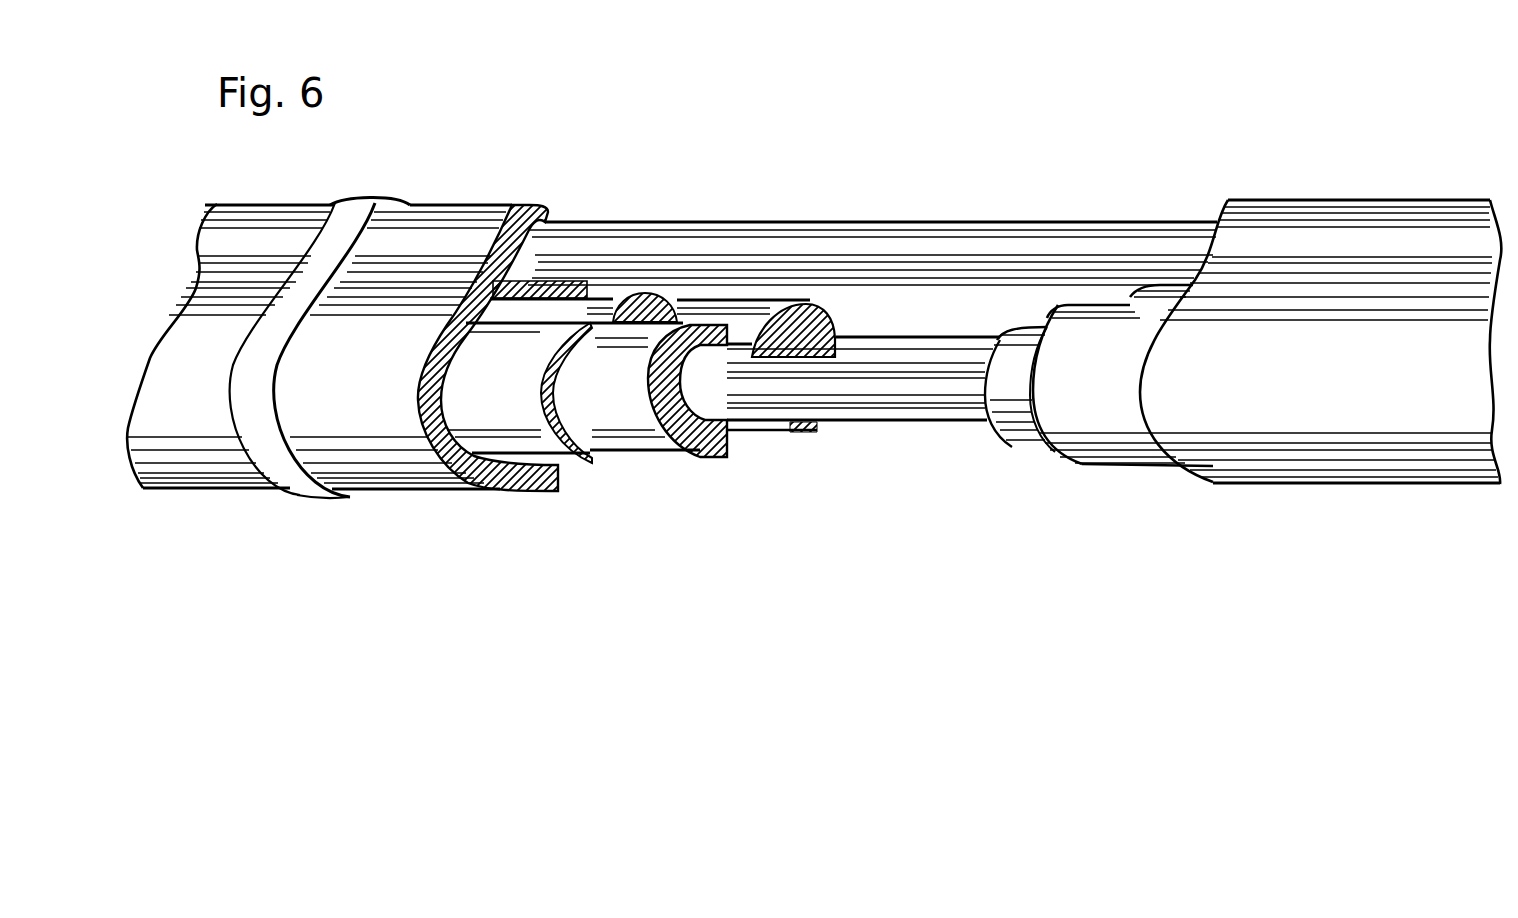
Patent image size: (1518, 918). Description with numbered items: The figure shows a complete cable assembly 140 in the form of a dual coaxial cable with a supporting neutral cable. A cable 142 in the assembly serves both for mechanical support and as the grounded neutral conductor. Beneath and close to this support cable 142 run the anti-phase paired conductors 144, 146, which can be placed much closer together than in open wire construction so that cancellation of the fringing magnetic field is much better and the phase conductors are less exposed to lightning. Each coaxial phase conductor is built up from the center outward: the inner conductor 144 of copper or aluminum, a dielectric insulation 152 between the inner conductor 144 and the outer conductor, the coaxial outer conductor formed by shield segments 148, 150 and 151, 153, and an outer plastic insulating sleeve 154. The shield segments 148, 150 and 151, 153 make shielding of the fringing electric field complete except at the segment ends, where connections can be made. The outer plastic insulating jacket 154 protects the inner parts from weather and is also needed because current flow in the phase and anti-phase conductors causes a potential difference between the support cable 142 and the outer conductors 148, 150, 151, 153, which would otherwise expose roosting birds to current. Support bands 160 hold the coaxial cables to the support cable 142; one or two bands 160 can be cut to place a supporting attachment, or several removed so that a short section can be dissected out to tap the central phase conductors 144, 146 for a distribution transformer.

The cable assembly 140 is at (771, 487).
The support cable 142 is at (572, 227).
The inner conductor 144 is at (933, 410).
The anti-phase paired conductor 146 is at (857, 338).
The coaxial outer conductor 148 is at (600, 466).
The shield segment 150 is at (652, 295).
The coaxial outer conductor 151 is at (1085, 464).
The dielectric insulation 152 is at (720, 458).
The shield segment 153 is at (1216, 228).
The outer plastic insulating sleeve 154 is at (456, 488).
The support band 160 is at (394, 204).